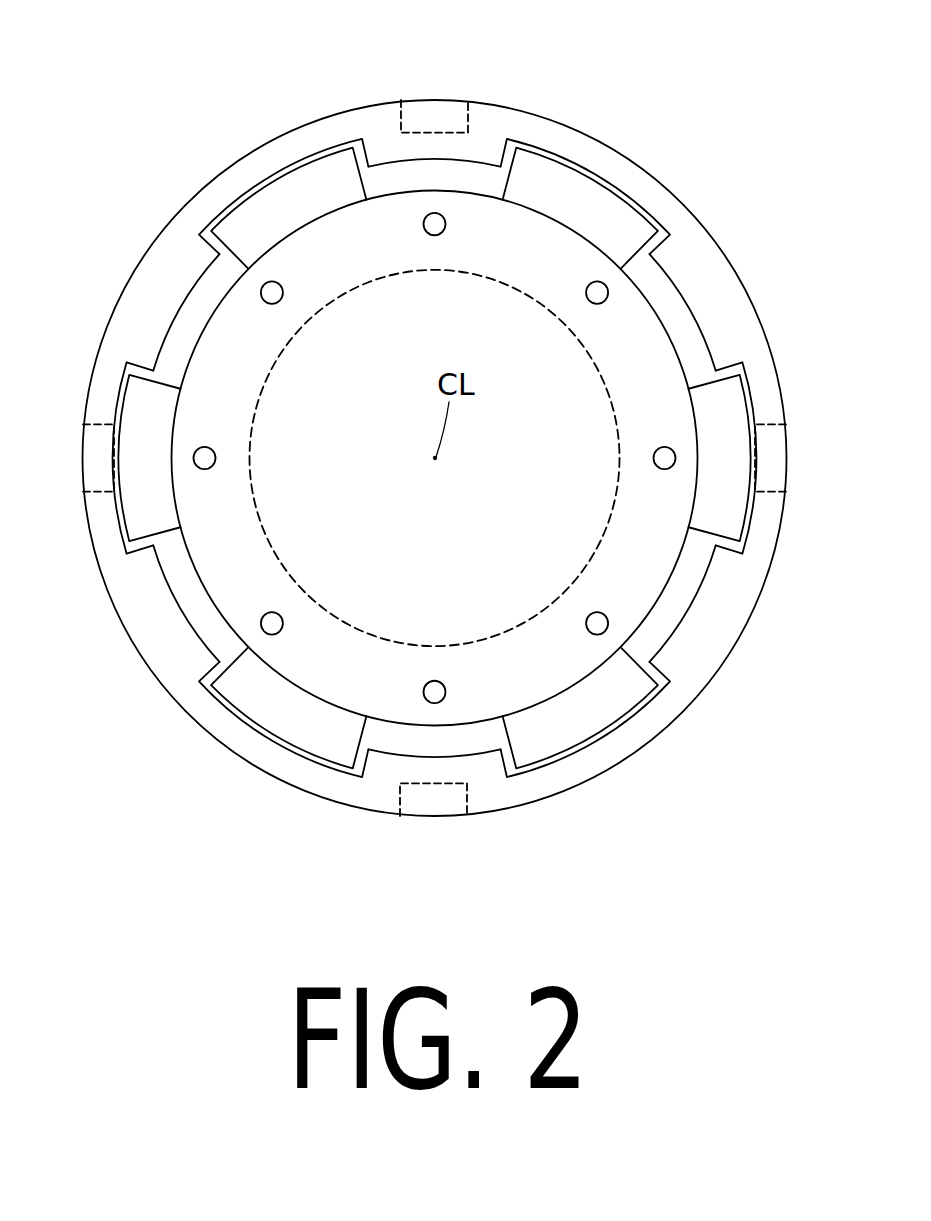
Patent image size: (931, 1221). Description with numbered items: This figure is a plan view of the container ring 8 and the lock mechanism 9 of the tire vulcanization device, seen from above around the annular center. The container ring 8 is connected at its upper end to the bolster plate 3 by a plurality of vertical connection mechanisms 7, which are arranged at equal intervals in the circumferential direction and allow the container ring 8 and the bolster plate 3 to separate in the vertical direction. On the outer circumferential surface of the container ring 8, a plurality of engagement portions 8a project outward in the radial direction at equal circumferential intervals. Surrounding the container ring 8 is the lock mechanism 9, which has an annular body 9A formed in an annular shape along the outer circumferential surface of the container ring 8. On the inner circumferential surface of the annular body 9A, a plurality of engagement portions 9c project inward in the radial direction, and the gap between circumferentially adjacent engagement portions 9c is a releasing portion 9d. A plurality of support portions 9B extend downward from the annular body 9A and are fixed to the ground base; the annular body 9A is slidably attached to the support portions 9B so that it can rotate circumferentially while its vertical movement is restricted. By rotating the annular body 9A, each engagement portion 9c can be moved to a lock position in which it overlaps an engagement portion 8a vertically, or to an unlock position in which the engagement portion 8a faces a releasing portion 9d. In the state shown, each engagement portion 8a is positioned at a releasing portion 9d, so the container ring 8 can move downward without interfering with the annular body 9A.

The bolster plate 3 is at (218, 335).
The vertical connection mechanism 7 is at (277, 303).
The container ring 8 is at (455, 431).
The engagement portion 8a is at (583, 182).
The lock mechanism 9 is at (438, 443).
The annular body 9A is at (500, 114).
The support portion 9B is at (430, 104).
The engagement portion 9c is at (415, 152).
The releasing portion 9d is at (322, 174).